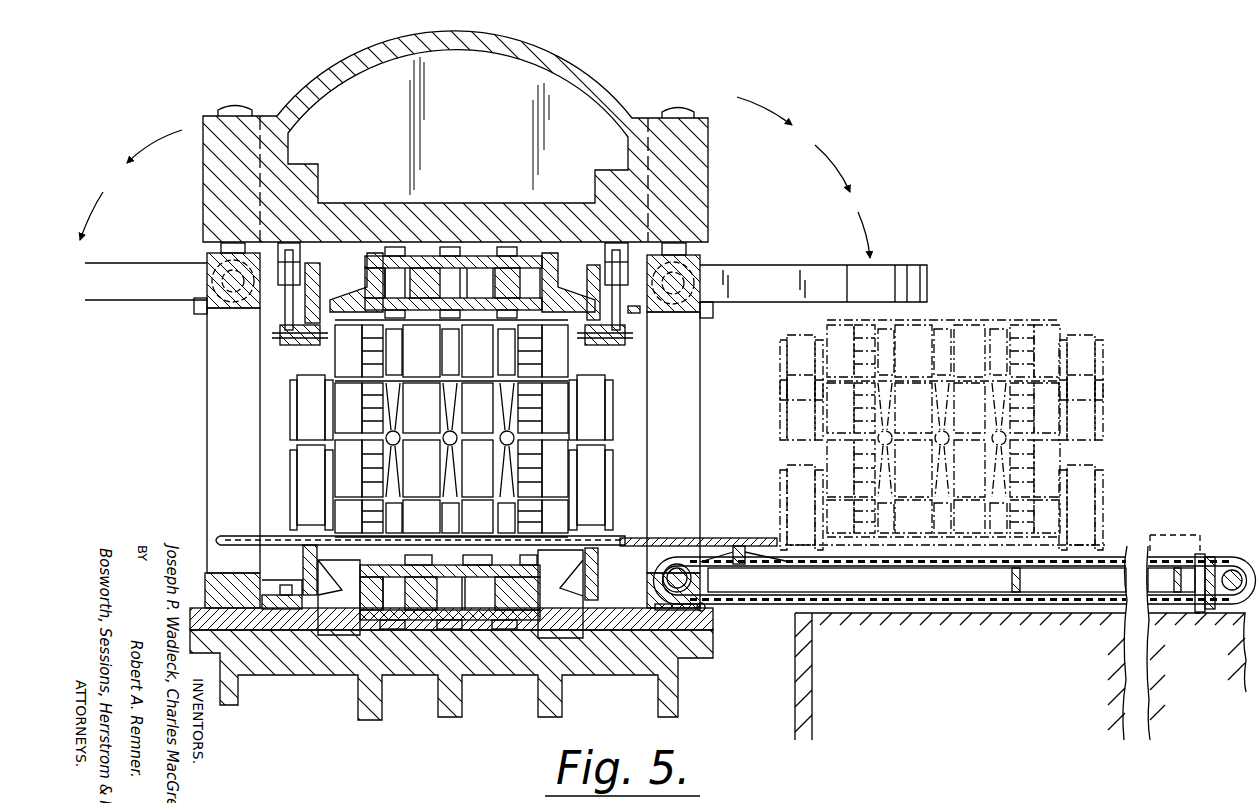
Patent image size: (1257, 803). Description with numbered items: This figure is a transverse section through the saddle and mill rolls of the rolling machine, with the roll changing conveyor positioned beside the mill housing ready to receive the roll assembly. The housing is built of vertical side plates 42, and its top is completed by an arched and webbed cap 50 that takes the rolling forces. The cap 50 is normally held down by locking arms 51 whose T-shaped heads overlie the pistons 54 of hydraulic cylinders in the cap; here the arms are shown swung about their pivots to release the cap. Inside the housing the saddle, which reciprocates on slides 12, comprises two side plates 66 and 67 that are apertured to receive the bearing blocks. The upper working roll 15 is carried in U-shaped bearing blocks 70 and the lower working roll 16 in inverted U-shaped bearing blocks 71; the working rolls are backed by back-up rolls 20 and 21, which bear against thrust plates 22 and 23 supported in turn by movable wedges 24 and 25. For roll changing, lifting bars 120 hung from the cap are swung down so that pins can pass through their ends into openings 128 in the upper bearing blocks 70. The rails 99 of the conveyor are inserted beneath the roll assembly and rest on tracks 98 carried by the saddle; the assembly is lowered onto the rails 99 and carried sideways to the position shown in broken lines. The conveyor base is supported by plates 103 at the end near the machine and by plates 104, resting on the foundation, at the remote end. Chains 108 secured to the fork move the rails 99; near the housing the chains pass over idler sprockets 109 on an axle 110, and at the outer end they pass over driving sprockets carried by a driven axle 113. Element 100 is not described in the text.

The cap 50 is at (320, 80).
The pistons 54 is at (222, 108).
The locking arms 51 is at (162, 268).
The side plates 42 is at (207, 360).
The saddle side plate 67 is at (320, 283).
The saddle side plate 66 is at (587, 283).
The openings 128 is at (310, 346).
The wedge 24 is at (462, 279).
The thrust plate 22 is at (453, 300).
The lifting bars 120 is at (620, 310).
The back-up roll 20 is at (697, 350).
The working roll 15 is at (697, 414).
The working roll 16 is at (697, 468).
The back-up roll 21 is at (720, 522).
The bearing blocks 70 is at (696, 387).
The bearing blocks 71 is at (696, 497).
The rails 99 is at (252, 536).
The thrust plate 23 is at (450, 582).
The wedge 25 is at (450, 610).
The tracks 98 is at (312, 600).
The slides 12 is at (583, 603).
The axle 110 is at (700, 539).
The conveyor 100 is at (733, 552).
The idler sprockets 109 is at (694, 580).
The supporting plates 103 is at (704, 610).
The chains 108 is at (1160, 565).
The driven axle 113 is at (1232, 568).
The supporting plates 104 is at (1192, 614).